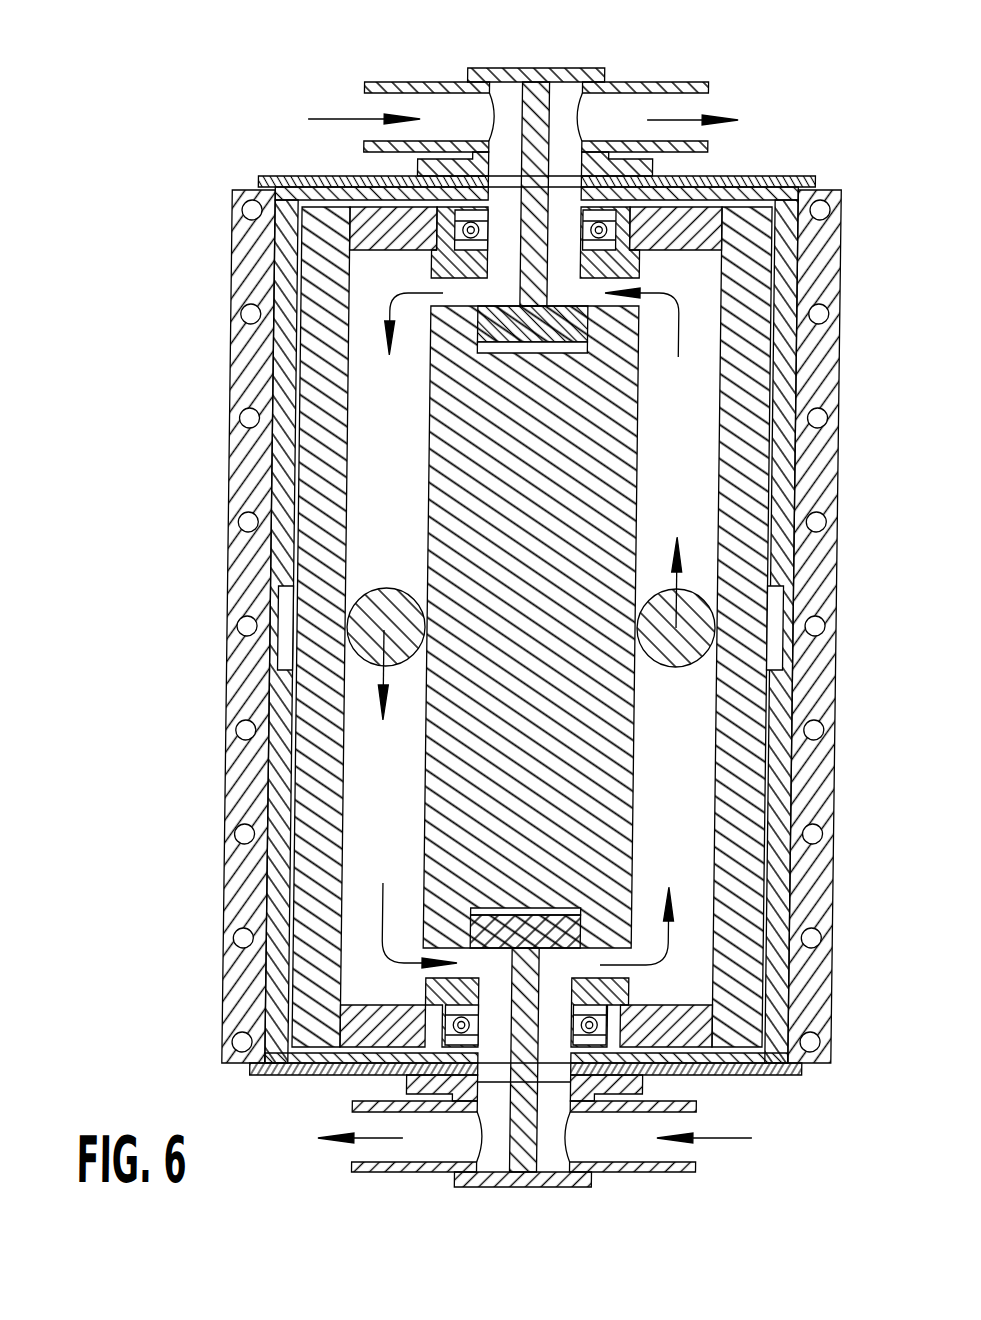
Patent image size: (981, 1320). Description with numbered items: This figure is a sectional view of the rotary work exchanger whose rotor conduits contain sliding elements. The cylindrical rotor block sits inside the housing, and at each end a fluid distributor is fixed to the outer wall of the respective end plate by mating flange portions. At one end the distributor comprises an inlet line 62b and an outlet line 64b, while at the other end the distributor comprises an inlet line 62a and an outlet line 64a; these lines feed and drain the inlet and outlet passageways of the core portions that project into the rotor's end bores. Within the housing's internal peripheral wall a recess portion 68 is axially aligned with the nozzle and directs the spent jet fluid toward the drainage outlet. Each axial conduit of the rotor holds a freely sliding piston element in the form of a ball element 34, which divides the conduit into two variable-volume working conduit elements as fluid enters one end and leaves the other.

The inlet line 62b is at (356, 82).
The outlet line 64b is at (686, 83).
The outlet line 64a is at (358, 1172).
The inlet line 62a is at (673, 1175).
The recess portion 68 is at (272, 622).
The ball element 34 is at (376, 588).